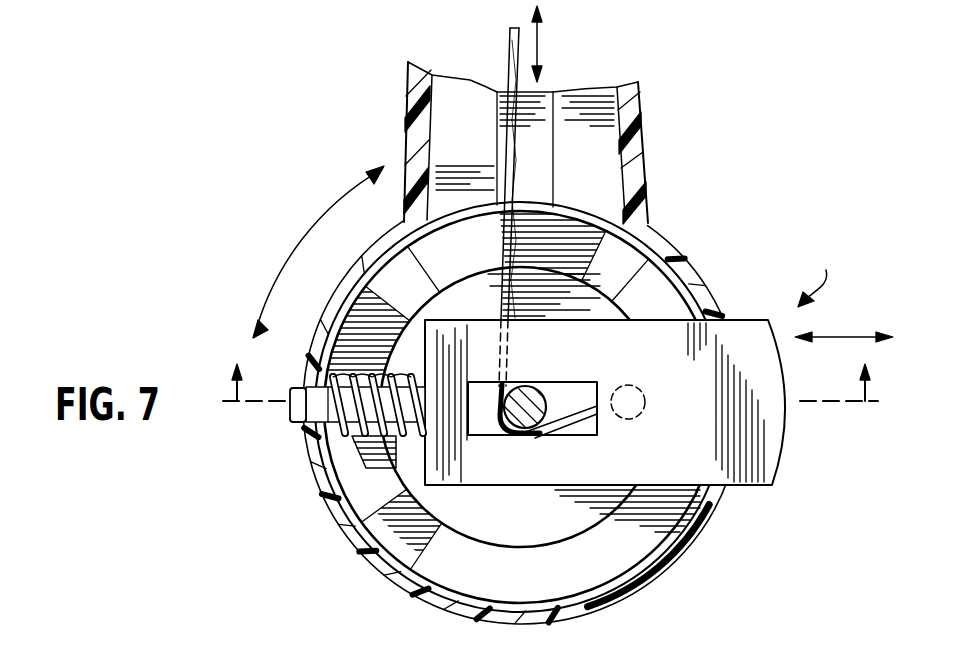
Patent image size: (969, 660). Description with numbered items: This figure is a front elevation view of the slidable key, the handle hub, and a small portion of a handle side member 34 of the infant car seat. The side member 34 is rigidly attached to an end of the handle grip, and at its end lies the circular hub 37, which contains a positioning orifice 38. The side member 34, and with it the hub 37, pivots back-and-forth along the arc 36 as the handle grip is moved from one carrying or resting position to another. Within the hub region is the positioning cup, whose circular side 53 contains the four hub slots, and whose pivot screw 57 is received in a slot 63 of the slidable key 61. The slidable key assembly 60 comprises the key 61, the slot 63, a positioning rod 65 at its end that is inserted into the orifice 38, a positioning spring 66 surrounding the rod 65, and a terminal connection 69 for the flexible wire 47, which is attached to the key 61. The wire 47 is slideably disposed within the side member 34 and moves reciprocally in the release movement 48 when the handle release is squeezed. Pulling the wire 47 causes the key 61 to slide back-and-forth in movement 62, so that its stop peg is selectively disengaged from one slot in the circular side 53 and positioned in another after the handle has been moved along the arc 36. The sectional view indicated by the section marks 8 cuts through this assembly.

The section line 8- 8 is at (549, 383).
The side member 34 is at (646, 142).
The arc 36 is at (305, 235).
The circular hub 37 is at (668, 240).
The positioning orifice 38 is at (302, 388).
The flexible wire 47 is at (510, 73).
The release movement 48 is at (540, 66).
The circular side 53 is at (677, 302).
The pivot screw 57 is at (535, 398).
The slidable key assembly 60 is at (819, 270).
The slidable key 61 is at (776, 442).
The movement 62 is at (842, 339).
The slot 63 is at (577, 390).
The positioning rod 65 is at (295, 413).
The positioning spring 66 is at (360, 450).
The terminal connection 69 is at (648, 396).